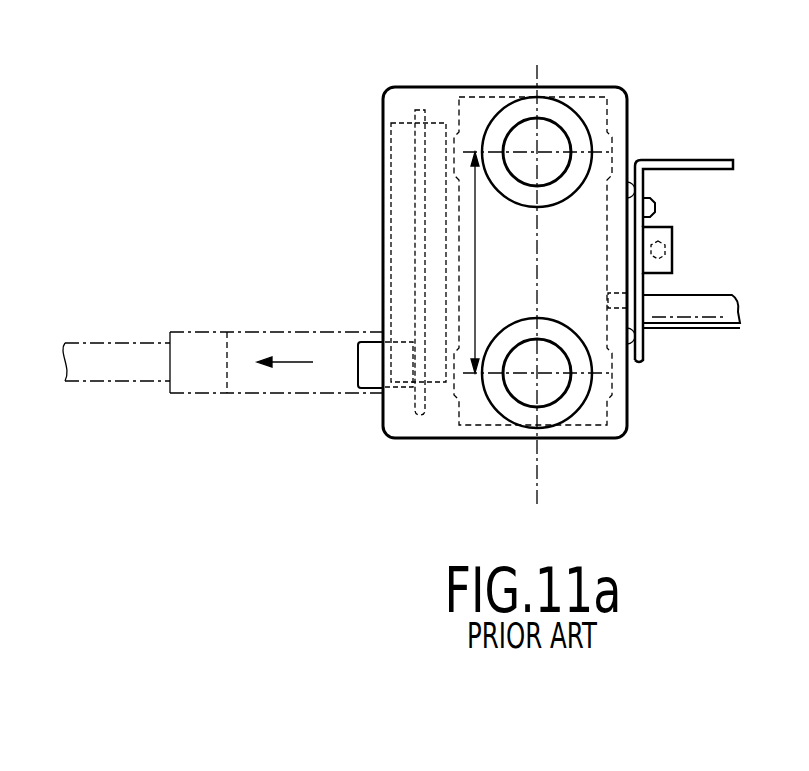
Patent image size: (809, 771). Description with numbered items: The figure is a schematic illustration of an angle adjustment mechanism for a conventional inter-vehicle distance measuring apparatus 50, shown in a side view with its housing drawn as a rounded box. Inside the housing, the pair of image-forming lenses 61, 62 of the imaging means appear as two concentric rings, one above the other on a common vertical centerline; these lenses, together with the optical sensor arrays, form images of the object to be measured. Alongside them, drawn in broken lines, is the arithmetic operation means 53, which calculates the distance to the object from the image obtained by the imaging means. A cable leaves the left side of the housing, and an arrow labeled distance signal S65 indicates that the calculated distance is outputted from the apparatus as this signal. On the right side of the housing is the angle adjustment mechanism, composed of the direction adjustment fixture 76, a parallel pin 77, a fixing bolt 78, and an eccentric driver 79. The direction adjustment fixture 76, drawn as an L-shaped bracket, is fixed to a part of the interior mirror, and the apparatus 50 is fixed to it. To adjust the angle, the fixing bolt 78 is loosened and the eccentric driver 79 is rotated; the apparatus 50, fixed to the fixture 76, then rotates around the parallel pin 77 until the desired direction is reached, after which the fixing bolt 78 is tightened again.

The inter-vehicle distance measuring apparatus 50 is at (383, 166).
The arithmetic operation means 53 is at (421, 107).
The image-forming lens 61 is at (547, 128).
The image-forming lens 62 is at (543, 392).
The distance signal S65 is at (313, 362).
The direction adjustment fixture 76 is at (667, 160).
The parallel pin 77 is at (655, 208).
The fixing bolt 78 is at (672, 250).
The eccentric driver 79 is at (685, 330).